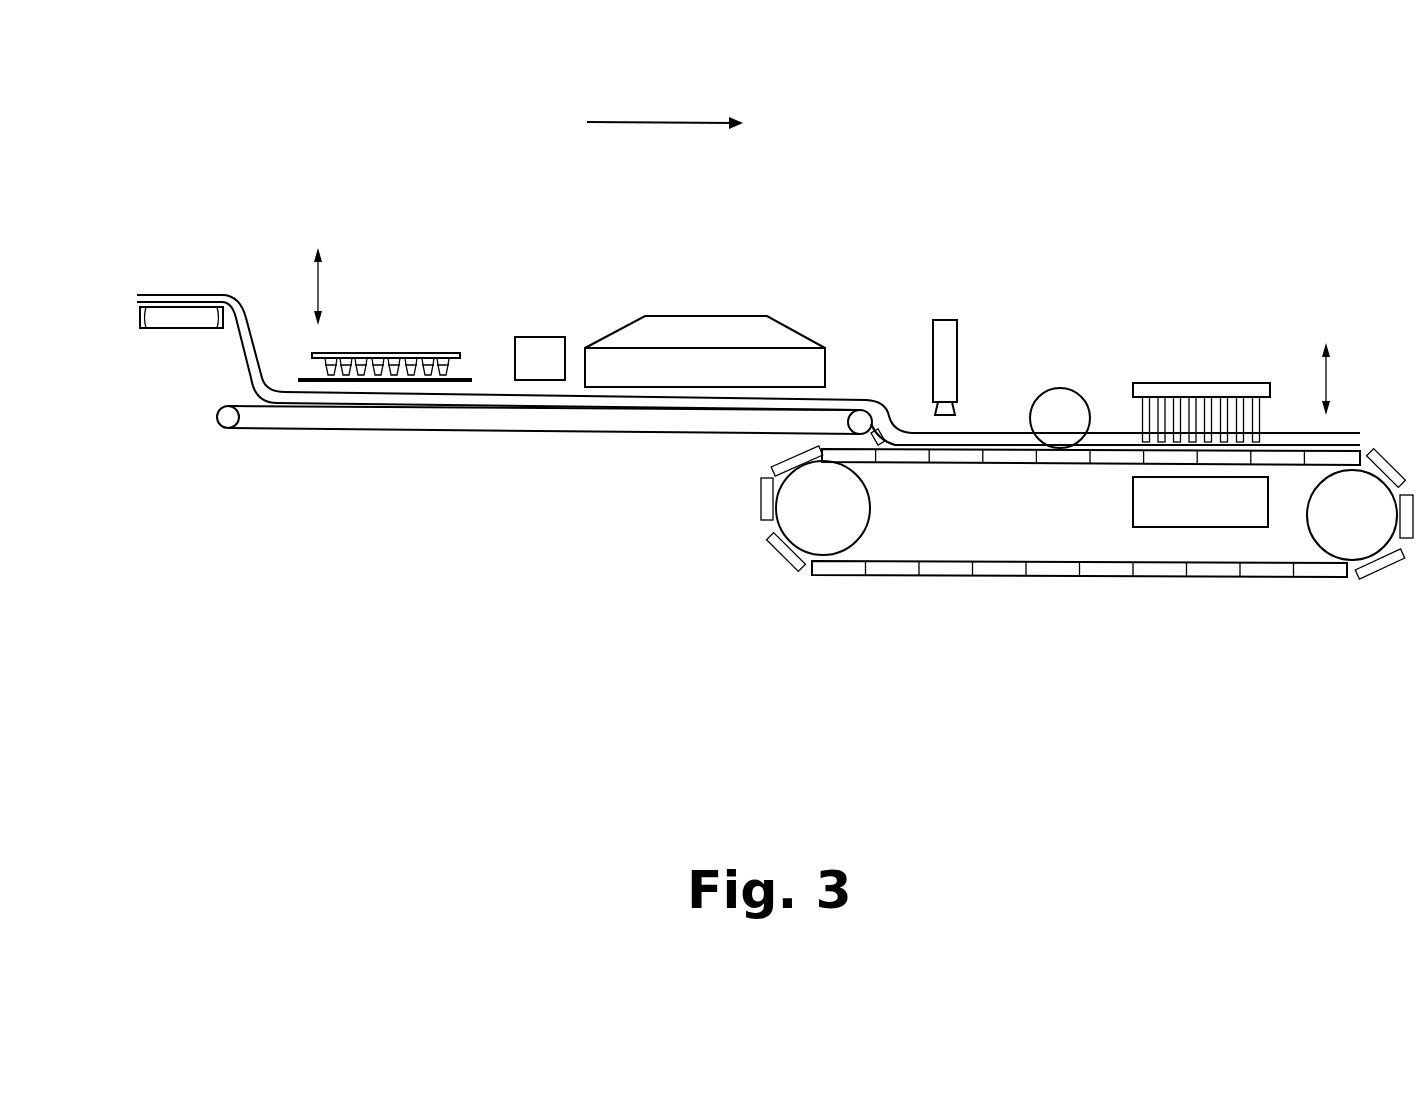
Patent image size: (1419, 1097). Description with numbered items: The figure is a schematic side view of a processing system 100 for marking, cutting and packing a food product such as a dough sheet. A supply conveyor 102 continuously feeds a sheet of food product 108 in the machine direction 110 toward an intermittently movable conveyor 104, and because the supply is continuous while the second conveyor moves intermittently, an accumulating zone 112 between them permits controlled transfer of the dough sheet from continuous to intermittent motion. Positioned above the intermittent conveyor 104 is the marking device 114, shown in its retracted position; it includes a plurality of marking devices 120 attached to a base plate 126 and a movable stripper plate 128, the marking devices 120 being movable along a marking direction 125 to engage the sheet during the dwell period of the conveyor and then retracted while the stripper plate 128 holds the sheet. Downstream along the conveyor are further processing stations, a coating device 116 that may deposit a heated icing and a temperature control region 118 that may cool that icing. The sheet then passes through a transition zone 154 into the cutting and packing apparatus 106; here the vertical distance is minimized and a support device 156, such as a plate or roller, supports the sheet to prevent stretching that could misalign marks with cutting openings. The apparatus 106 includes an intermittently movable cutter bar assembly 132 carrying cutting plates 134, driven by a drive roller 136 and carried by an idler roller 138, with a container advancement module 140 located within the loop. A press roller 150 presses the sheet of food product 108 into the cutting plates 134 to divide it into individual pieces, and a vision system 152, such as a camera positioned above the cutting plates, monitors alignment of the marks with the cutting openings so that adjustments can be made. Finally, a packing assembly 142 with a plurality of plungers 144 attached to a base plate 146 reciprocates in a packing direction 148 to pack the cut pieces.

The processing system 100 is at (425, 664).
The supply conveyor 102 is at (172, 323).
The intermittently movable conveyor 104 is at (340, 418).
The cutting and packing apparatus 106 is at (1010, 706).
The sheet of food product 108 is at (184, 293).
The machine direction 110 is at (665, 108).
The accumulating zone 112 is at (214, 372).
The marking device 114 is at (355, 338).
The coating device 116 is at (550, 345).
The temperature control region 118 is at (700, 325).
The marking devices 120 is at (327, 368).
The marking direction 125 is at (323, 283).
The base plate 126 is at (393, 352).
The stripper plate 128 is at (508, 338).
The cutter bar assembly 132 is at (874, 624).
The cutting plates 134 is at (957, 452).
The drive roller 136 is at (1355, 530).
The idler roller 138 is at (813, 518).
The container advancement module 140 is at (1198, 505).
The packing assembly 142 is at (1162, 372).
The plungers 144 is at (1245, 437).
The base plate 146 is at (1212, 383).
The packing direction 148 is at (1328, 378).
The press roller 150 is at (1055, 387).
The vision system 152 is at (943, 332).
The transition zone 154 is at (901, 372).
The support device 156 is at (873, 441).